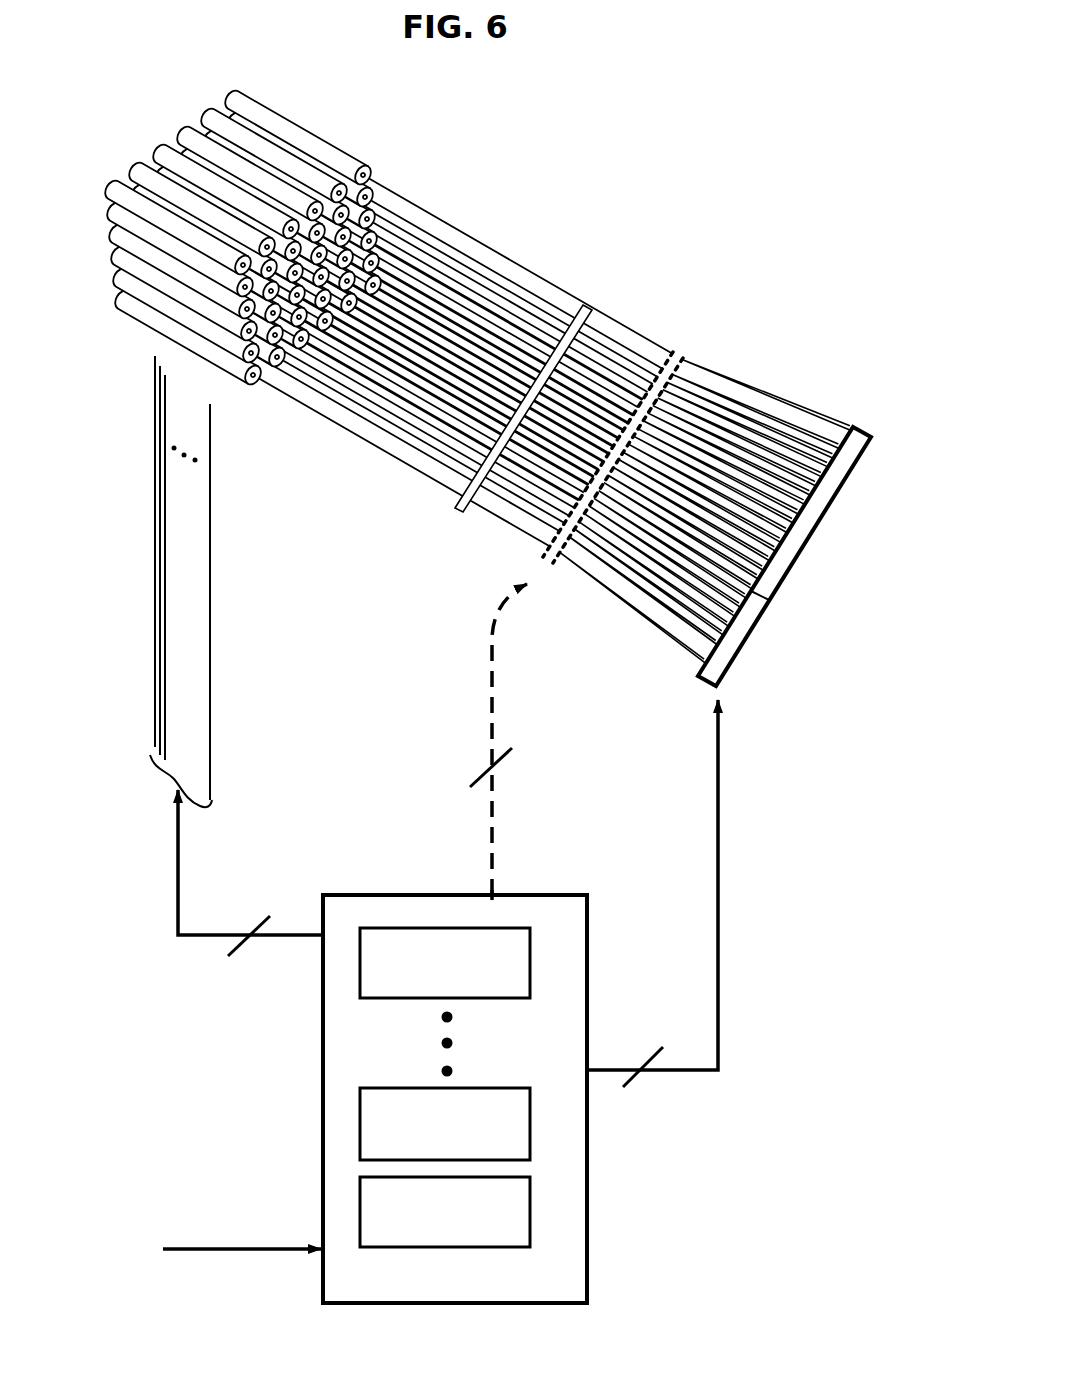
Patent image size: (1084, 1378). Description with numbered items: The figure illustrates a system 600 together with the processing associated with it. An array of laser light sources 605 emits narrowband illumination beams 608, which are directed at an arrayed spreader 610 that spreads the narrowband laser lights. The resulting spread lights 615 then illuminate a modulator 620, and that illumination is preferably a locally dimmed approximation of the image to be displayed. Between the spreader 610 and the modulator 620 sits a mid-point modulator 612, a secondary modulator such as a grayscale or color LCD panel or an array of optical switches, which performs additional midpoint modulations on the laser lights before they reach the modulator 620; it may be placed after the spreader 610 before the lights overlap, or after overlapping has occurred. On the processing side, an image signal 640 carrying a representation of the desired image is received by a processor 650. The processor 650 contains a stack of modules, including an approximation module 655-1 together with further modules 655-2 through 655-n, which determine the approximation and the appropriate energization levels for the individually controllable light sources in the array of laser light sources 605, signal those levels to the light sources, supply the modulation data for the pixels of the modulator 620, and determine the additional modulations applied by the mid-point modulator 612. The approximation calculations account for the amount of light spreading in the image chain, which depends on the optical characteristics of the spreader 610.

The system 600 is at (434, 735).
The array of laser light sources 605 is at (387, 307).
The narrowband illumination beams 608 is at (485, 235).
The spreader 610 is at (603, 296).
The mid-point modulator 612 is at (691, 343).
The spread lights 615 is at (761, 363).
The modulator 620 is at (881, 430).
The image signal 640 is at (242, 1232).
The processor 650 is at (455, 1099).
The processing module 655-n is at (445, 963).
The processing module 655-2 is at (445, 1124).
The approximation module 655-1 is at (445, 1212).